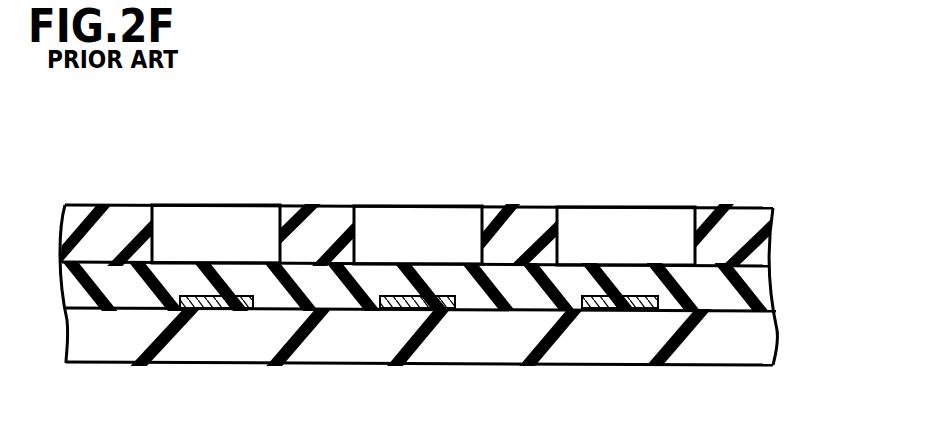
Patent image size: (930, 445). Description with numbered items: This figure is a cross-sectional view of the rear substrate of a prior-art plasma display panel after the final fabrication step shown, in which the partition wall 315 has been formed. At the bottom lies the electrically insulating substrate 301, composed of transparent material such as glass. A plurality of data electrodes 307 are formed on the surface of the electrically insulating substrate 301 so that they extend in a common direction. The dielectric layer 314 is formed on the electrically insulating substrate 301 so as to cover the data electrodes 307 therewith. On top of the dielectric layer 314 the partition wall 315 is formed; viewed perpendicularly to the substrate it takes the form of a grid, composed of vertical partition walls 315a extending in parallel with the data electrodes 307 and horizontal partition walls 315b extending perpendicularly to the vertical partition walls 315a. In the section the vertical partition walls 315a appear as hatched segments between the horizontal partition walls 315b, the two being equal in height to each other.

The electrically insulating substrate 301 is at (750, 351).
The data electrodes 307 is at (213, 310).
The dielectric layer 314 is at (750, 298).
The partition wall 315 is at (423, 179).
The vertical partition walls 315a is at (113, 215).
The horizontal partition walls 315b is at (218, 216).